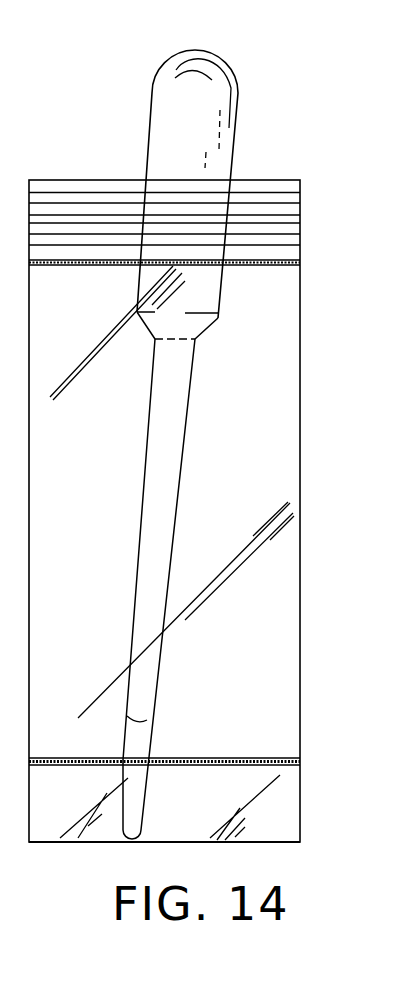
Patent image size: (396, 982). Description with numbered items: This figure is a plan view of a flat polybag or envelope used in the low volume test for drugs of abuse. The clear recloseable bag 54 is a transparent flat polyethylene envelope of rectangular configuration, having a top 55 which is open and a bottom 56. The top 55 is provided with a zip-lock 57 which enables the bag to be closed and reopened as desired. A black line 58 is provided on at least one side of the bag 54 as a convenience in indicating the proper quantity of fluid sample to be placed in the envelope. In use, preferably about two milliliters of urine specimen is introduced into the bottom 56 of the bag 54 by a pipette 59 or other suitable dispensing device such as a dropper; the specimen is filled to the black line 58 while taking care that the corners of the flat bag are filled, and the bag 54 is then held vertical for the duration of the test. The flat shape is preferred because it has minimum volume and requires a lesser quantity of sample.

The clear recloseable bag 54 is at (300, 433).
The top 55 is at (78, 178).
The bottom 56 is at (285, 842).
The zip-lock 57 is at (285, 268).
The black line 58 is at (285, 763).
The pipette 59 is at (217, 103).